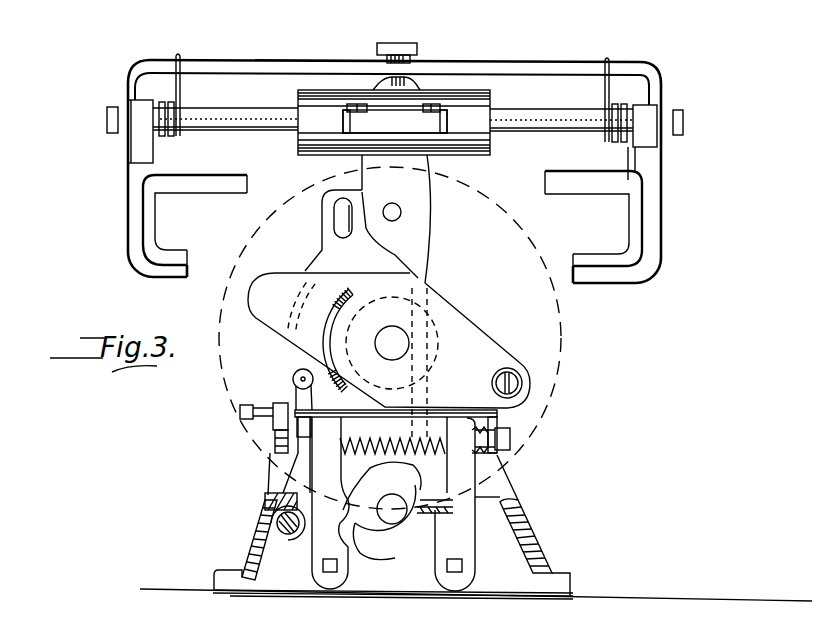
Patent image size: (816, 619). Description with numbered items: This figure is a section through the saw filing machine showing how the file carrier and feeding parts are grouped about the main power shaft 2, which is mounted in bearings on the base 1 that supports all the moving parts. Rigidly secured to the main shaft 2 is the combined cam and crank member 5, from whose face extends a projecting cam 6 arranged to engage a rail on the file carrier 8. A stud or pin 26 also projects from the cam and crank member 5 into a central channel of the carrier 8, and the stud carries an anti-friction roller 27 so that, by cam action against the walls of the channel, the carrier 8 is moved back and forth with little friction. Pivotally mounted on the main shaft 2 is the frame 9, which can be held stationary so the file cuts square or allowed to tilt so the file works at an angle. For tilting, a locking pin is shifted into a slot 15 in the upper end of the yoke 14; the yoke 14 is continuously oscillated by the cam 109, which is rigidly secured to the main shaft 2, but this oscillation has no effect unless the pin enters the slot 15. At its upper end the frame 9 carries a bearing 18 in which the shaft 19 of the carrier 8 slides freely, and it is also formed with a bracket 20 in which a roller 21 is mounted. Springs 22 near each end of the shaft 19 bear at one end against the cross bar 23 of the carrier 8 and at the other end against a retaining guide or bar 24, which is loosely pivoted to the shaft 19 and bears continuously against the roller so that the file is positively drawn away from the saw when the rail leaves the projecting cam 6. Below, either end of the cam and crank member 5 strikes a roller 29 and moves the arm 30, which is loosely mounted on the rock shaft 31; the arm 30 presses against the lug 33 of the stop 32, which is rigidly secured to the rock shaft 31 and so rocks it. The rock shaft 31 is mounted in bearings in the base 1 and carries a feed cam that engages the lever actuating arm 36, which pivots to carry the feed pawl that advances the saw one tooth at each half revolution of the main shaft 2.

The base 1 is at (207, 555).
The main power shaft 2 is at (410, 332).
The combined cam and crank member 5 is at (497, 347).
The projecting cam 6 is at (318, 330).
The file carrier 8 is at (153, 250).
The frame 9 is at (425, 170).
The yoke 14 is at (397, 260).
The slot 15 is at (333, 219).
The bearing 18 is at (298, 93).
The shaft 19 is at (266, 130).
The bracket 20 is at (407, 43).
The roller 21 is at (375, 49).
The springs 22 is at (153, 153).
The cross bar 23 is at (221, 190).
The retaining guide or bar 24 is at (263, 56).
The stud or pin 26 is at (518, 383).
The anti-friction roller 27 is at (514, 370).
The roller 29 is at (290, 382).
The arm 30 is at (380, 460).
The rock shaft 31 is at (287, 536).
The stop 32 is at (283, 477).
The lug 33 is at (273, 457).
The lever actuating arm 36 is at (397, 523).
The cam 109 is at (458, 289).